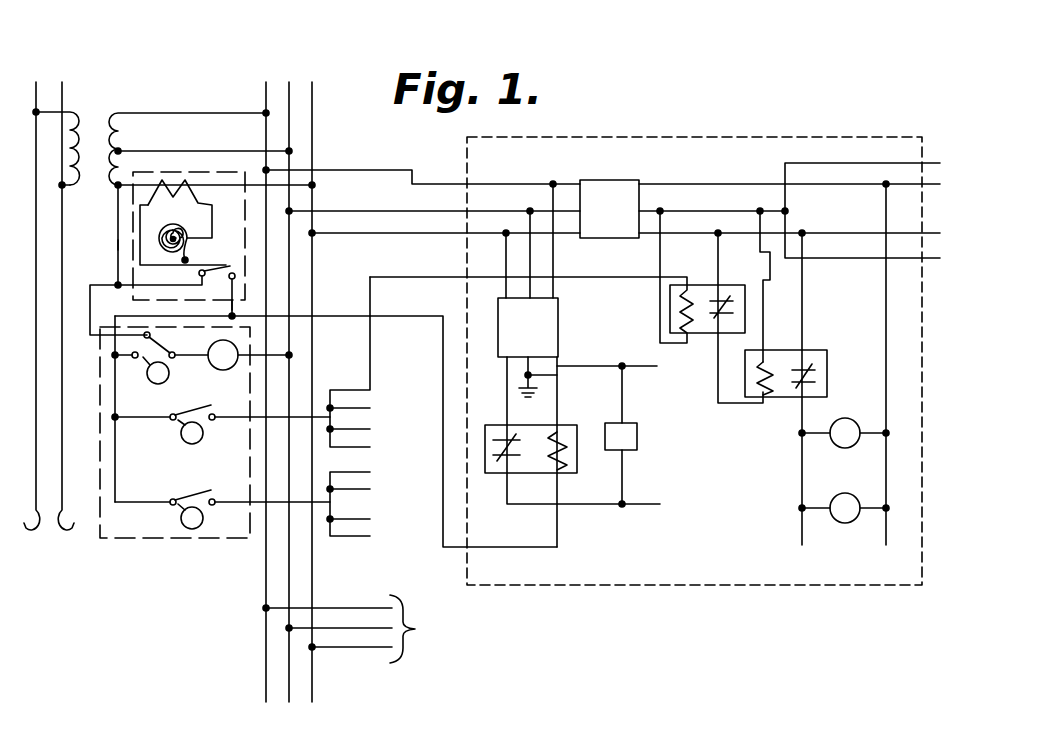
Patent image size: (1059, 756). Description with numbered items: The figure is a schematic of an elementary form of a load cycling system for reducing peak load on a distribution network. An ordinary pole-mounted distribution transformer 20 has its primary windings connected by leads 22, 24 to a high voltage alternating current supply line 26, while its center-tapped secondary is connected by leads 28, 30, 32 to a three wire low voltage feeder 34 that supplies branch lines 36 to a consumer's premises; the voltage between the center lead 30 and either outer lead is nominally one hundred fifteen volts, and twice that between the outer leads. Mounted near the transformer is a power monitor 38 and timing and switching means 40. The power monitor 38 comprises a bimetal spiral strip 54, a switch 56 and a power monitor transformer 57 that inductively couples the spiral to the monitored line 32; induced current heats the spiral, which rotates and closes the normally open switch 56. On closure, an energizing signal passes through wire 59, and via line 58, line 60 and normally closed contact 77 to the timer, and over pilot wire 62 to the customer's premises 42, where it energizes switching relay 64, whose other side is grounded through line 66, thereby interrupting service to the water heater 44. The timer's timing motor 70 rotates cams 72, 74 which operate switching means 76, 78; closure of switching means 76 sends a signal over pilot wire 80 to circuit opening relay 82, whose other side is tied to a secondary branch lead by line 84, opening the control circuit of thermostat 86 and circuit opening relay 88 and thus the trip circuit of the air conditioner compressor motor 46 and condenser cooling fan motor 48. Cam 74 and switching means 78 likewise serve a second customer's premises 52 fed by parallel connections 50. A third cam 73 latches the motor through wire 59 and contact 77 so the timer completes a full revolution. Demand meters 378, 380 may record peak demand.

The distribution transformer 20 is at (97, 115).
The lead 22 is at (47, 113).
The lead 24 is at (63, 188).
The high voltage alternating current supply line 26 is at (49, 313).
The lead 28 is at (182, 113).
The center lead 30 is at (166, 151).
The lead 32 is at (253, 185).
The three wire low voltage feeder 34 is at (265, 96).
The branch lines 36 is at (366, 229).
The power monitor 38 is at (131, 257).
The timing and switching means 40 is at (149, 541).
The customer's premises 42 is at (733, 134).
The water heater 44 is at (637, 448).
The air conditioner compressor motor 46 is at (843, 418).
The condenser cooling fan motor 48 is at (843, 493).
The connections 50 is at (288, 627).
The second customer's premises 52 is at (410, 617).
The bimetal spiral strip 54 is at (173, 226).
The switch 56 is at (217, 292).
The power monitor transformer 57 is at (198, 198).
The line 58 is at (236, 310).
The wire 59 is at (118, 245).
The line 60 is at (128, 312).
The pilot wire 62 is at (395, 315).
The switching relay 64 is at (562, 476).
The line 66 is at (561, 403).
The timing motor 70 is at (221, 376).
The cam 72 is at (182, 435).
The third cam 73 is at (148, 375).
The cam 74 is at (180, 518).
The switching means 76 is at (191, 408).
The normally closed contact 77 is at (167, 348).
The switching means 78 is at (183, 500).
The pilot wire 80 is at (318, 414).
The circuit opening relay 82 is at (710, 336).
The line 84 is at (660, 313).
The thermostat 86 is at (770, 275).
The circuit opening relay 88 is at (788, 400).
The demand meter 378 is at (620, 180).
The demand meter 380 is at (563, 310).